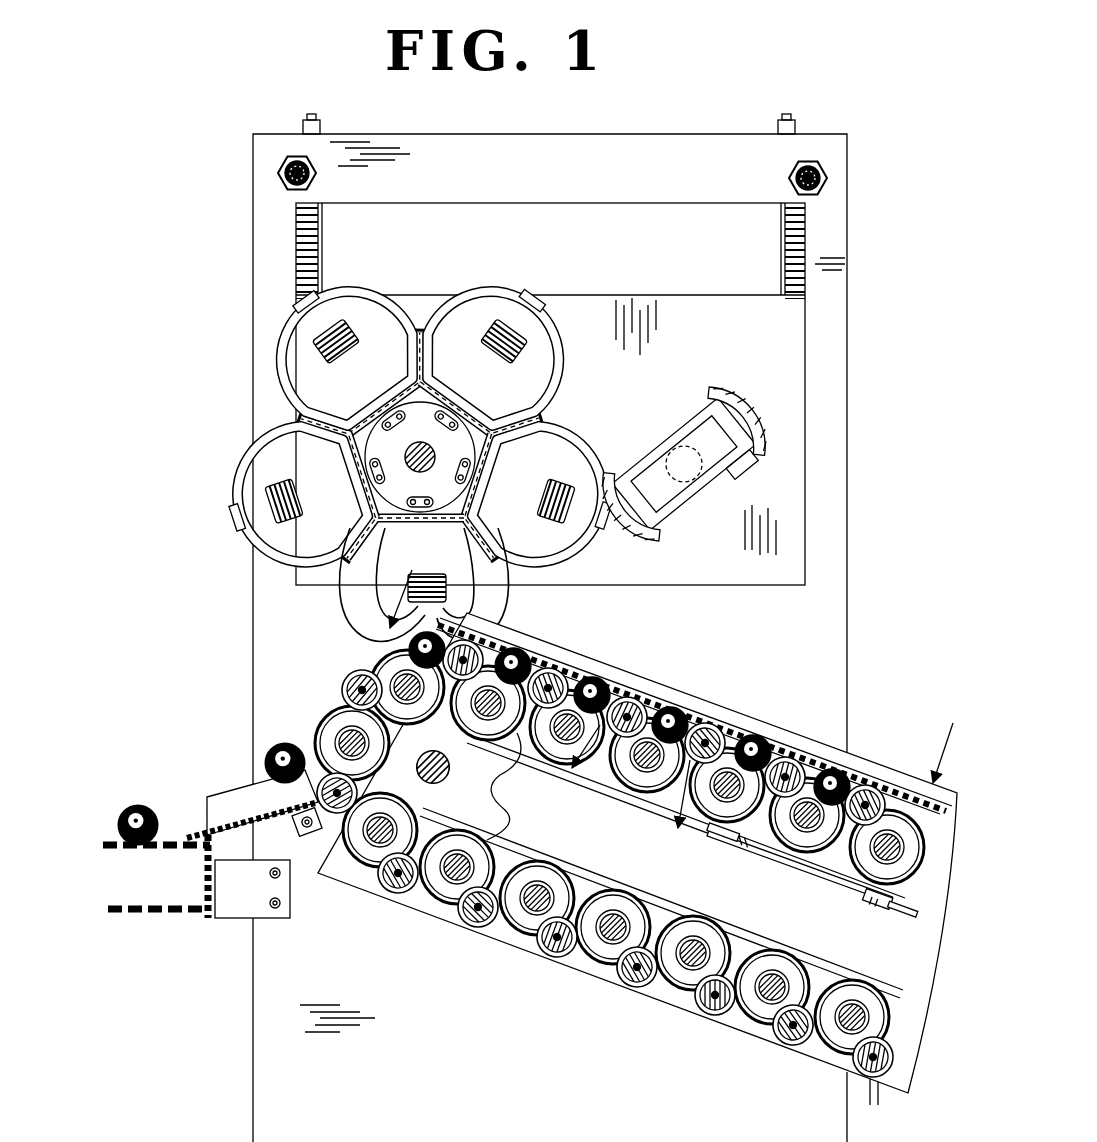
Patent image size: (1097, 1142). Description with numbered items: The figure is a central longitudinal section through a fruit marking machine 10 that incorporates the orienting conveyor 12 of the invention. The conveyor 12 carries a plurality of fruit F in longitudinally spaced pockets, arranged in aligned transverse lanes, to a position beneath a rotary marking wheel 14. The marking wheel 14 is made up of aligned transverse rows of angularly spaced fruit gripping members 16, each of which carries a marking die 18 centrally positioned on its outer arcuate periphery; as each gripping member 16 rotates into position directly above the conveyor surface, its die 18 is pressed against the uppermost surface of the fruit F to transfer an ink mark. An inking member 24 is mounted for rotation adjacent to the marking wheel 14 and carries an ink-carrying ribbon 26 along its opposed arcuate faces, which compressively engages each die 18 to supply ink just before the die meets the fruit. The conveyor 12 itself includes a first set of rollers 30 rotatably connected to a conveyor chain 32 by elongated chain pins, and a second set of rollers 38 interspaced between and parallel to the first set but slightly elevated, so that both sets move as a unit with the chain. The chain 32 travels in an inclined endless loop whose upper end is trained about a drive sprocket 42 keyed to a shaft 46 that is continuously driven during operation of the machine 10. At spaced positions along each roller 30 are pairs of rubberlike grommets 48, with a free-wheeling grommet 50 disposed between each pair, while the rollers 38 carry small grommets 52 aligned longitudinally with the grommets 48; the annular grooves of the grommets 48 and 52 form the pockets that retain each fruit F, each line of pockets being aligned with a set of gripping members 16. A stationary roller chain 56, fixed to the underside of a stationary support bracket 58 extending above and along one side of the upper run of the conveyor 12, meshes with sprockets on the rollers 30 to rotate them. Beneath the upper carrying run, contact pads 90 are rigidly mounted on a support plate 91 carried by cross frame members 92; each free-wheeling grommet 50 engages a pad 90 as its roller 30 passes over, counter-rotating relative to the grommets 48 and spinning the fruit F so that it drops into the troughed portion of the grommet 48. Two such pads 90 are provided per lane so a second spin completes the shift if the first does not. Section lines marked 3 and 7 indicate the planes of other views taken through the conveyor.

The fruit marking machine 10 is at (190, 232).
The conveyor 12 is at (752, 716).
The rotary marking wheel 14 is at (238, 485).
The fruit gripping members 16 is at (384, 305).
The marking die 18 is at (522, 300).
The inking member 24 is at (770, 432).
The ink-carrying ribbon 26 is at (735, 398).
The first set of rollers 30 is at (537, 893).
The conveyor chain 32 is at (448, 712).
The second set of rollers 38 is at (360, 694).
The drive sprocket 42 is at (508, 795).
The shaft 46 is at (428, 780).
The grommets 48 is at (393, 665).
The free-wheeling grommet 50 is at (320, 735).
The small grommets 52 is at (347, 681).
The stationary roller chain 56 is at (593, 673).
The stationary support bracket 58 is at (613, 693).
The contact pads 90 is at (740, 841).
The support plate 91 is at (785, 862).
The cross frame members 92 is at (742, 858).
The section line 3- 3 is at (662, 677).
The section line 7- 7 is at (629, 779).
The fruit F is at (283, 752).